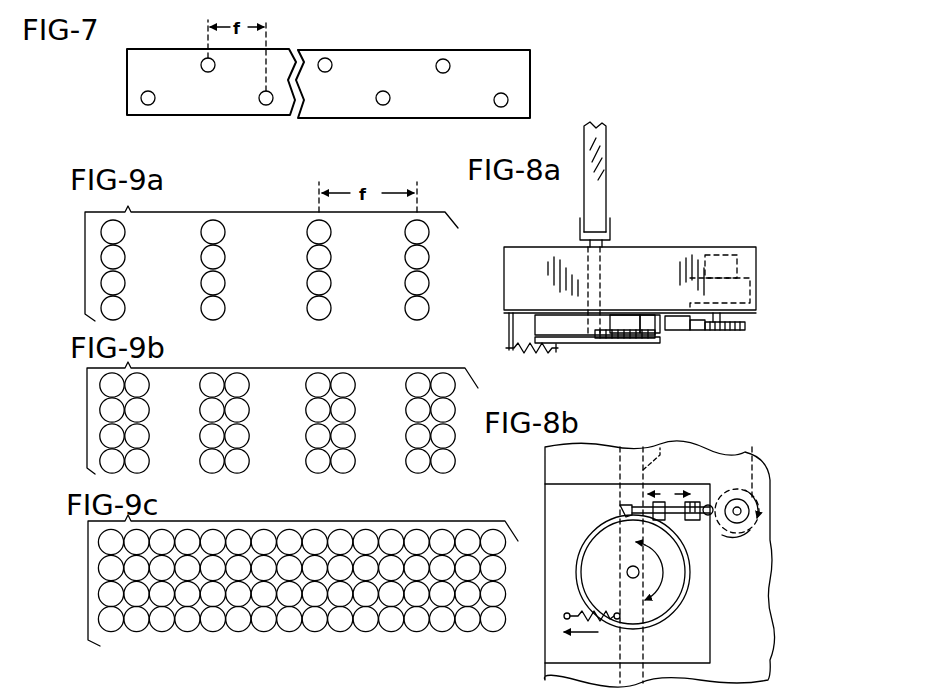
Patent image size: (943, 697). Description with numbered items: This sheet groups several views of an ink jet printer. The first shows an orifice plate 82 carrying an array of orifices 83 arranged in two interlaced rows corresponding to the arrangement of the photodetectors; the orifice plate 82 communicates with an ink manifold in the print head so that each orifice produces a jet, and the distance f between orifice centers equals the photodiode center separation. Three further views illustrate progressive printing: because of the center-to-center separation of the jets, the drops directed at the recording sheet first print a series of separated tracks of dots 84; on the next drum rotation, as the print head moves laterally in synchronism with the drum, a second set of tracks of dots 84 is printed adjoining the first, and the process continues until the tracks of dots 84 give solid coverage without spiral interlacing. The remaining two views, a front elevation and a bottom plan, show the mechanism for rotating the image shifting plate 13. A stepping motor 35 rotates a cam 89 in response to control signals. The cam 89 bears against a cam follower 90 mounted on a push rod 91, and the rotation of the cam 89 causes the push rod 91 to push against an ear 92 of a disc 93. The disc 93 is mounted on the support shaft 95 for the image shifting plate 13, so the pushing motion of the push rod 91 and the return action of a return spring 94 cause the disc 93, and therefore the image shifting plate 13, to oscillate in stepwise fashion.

In FIG. 8A, the image shifting plate 13 is at (598, 195).
In FIG. 8B, the image shifting plate 13 is at (660, 466).
In FIG. 8A, the stepping motor 35 is at (720, 248).
In FIG. 8B, the stepping motor 35 is at (750, 463).
In FIG. 7, the orifice plate 82 is at (513, 73).
In FIG. 7, the orifices 83 is at (385, 97).
In FIG. 9A, the tracks of dots 84 is at (411, 235).
In FIG. 9B, the tracks of dots 84 is at (414, 410).
In FIG. 9C, the tracks of dots 84 is at (366, 627).
In FIG. 8A, the cam 89 is at (718, 331).
In FIG. 8B, the cam 89 is at (735, 525).
In FIG. 8A, the cam follower 90 is at (693, 331).
In FIG. 8B, the cam follower 90 is at (708, 504).
In FIG. 8A, the push rod 91 is at (672, 330).
In FIG. 8B, the push rod 91 is at (693, 502).
In FIG. 8B, the ear 92 is at (630, 504).
In FIG. 8A, the disc 93 is at (577, 338).
In FIG. 8B, the disc 93 is at (600, 540).
In FIG. 8A, the return spring 94 is at (520, 352).
In FIG. 8B, the return spring 94 is at (590, 625).
In FIG. 8A, the support shaft 95 is at (617, 255).
In FIG. 8B, the support shaft 95 is at (627, 572).